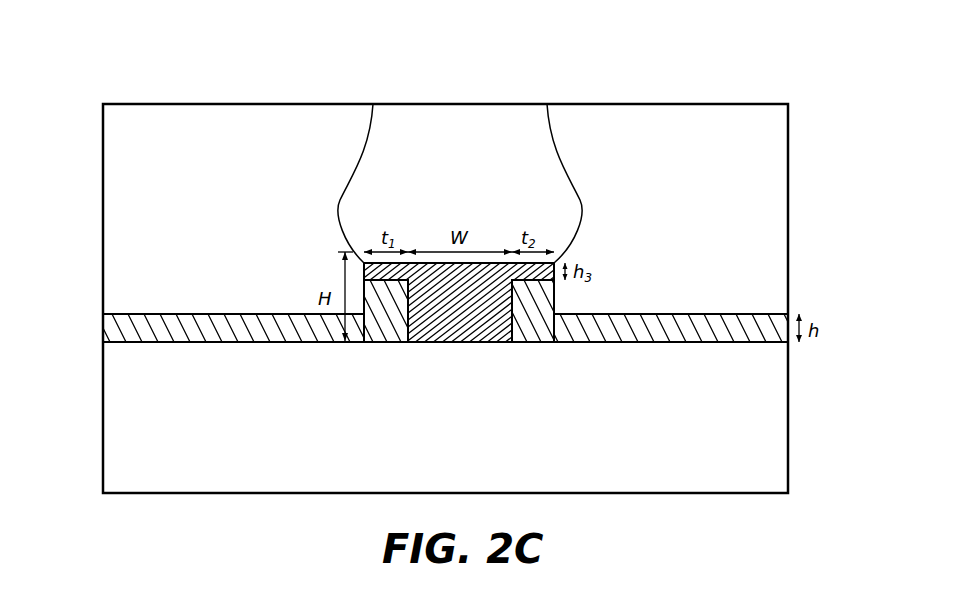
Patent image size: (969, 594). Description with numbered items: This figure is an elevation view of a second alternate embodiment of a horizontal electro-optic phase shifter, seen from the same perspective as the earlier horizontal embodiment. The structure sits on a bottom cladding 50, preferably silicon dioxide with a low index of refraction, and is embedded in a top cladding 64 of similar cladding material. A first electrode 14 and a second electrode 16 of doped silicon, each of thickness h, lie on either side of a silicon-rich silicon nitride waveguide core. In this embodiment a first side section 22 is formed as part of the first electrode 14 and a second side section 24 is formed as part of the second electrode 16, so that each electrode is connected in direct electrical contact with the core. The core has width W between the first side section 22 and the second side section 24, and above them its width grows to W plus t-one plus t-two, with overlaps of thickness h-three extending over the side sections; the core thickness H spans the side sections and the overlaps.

The top cladding 64 is at (655, 186).
The second side section 24 is at (545, 298).
The second electrode 16 is at (735, 313).
The first electrode 14 is at (148, 343).
The first side section 22 is at (372, 343).
The bottom cladding 50 is at (652, 452).